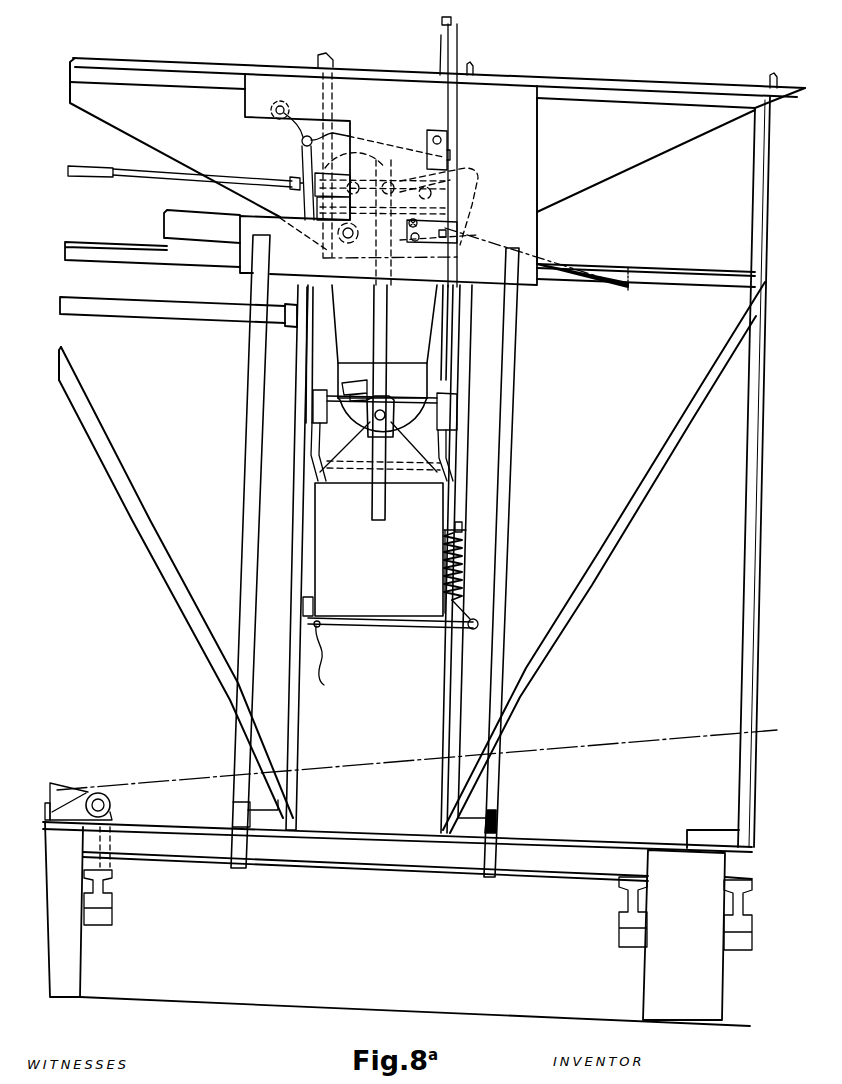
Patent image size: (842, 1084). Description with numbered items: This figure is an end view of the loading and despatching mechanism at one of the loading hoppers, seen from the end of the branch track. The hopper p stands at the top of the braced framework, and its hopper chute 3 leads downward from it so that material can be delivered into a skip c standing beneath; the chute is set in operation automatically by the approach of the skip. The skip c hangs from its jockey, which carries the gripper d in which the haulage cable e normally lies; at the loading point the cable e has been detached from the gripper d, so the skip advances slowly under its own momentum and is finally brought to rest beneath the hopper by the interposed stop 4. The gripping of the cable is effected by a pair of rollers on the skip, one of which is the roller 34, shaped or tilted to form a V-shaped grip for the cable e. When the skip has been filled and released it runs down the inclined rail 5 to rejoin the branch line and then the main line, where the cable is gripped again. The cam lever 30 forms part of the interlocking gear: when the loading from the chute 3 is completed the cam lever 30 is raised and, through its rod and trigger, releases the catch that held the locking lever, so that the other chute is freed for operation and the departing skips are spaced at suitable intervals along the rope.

The hopper p is at (646, 181).
The inclined rail 5 is at (558, 258).
The stop 4 is at (462, 168).
The hopper chute 3 is at (384, 341).
The roller 34 is at (352, 381).
The gripper d is at (372, 423).
The skip c is at (379, 549).
The haulage cable e is at (176, 582).
The cam lever 30 is at (56, 792).